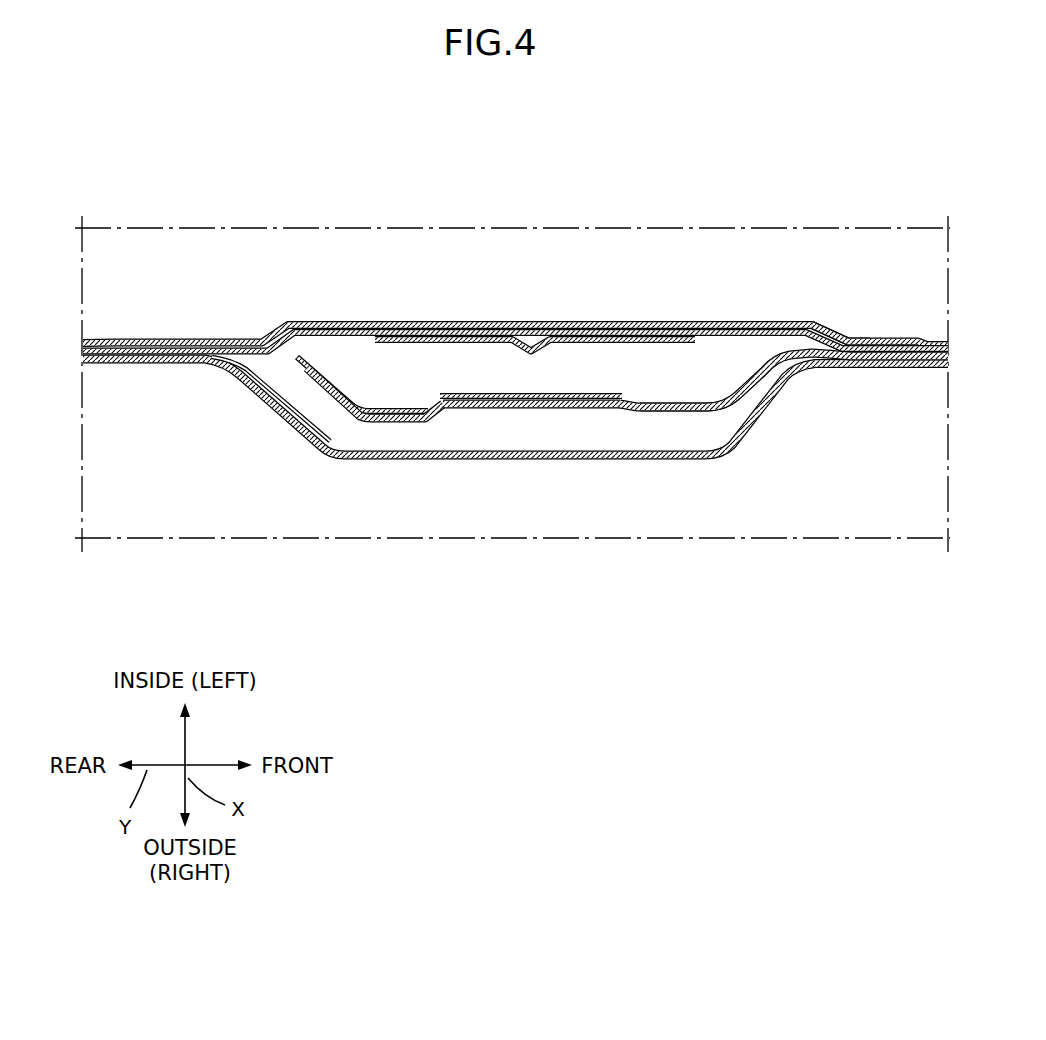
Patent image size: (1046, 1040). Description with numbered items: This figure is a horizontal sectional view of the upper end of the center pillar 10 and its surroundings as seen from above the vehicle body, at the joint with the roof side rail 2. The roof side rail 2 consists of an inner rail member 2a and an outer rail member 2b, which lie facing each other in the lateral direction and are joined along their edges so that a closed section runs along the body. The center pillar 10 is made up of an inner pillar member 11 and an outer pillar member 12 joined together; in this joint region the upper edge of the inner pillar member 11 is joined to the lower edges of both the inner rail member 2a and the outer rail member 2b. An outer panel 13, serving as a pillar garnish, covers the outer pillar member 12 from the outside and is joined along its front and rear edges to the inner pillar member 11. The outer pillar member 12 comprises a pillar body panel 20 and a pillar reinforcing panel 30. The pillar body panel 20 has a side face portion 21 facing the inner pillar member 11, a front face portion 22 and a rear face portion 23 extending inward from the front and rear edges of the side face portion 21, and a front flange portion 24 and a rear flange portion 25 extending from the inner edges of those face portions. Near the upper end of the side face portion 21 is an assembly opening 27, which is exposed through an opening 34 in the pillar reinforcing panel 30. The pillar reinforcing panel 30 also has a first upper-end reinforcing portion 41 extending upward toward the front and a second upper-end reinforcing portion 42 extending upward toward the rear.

The roof side rail 2 is at (580, 185).
The inner rail member 2a is at (490, 325).
The outer rail member 2b is at (553, 347).
The center pillar 10 is at (773, 632).
The inner pillar member 11 is at (800, 356).
The outer pillar member 12 is at (845, 584).
The outer panel 13 is at (297, 423).
The pillar body panel 20 is at (775, 368).
The side face portion 21 is at (657, 395).
The front face portion 22 is at (728, 395).
The rear face portion 23 is at (338, 388).
The front flange portion 24 is at (840, 343).
The rear flange portion 25 is at (243, 380).
The assembly opening 27 is at (480, 393).
The pillar reinforcing panel 30 is at (720, 413).
The opening 34 is at (517, 411).
The first upper-end reinforcing portion 41 is at (690, 413).
The second upper-end reinforcing portion 42 is at (393, 427).